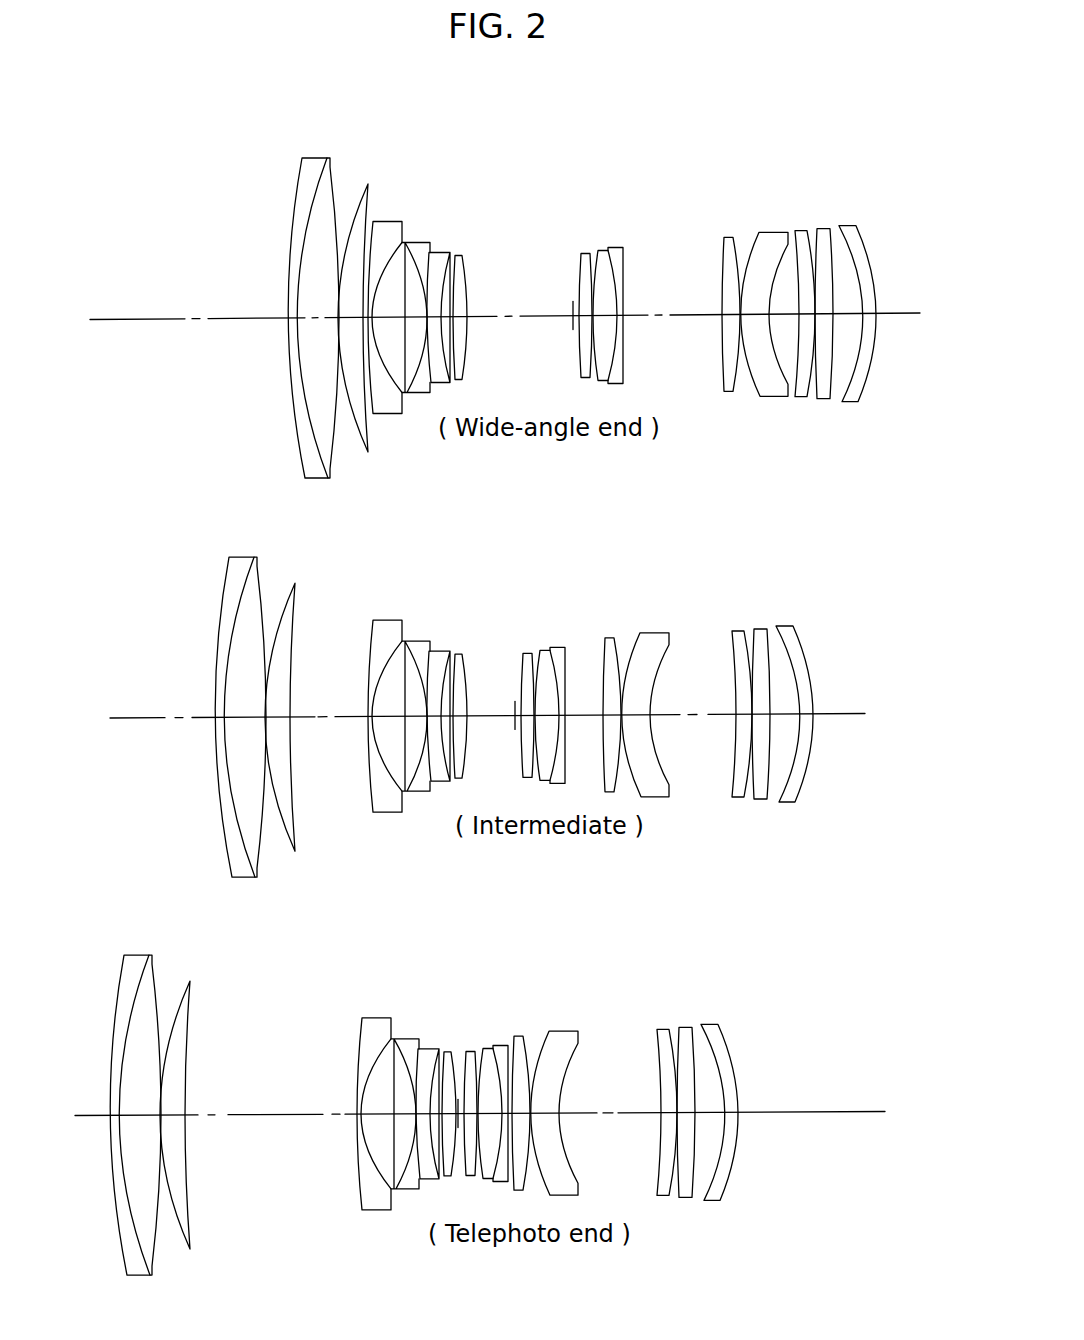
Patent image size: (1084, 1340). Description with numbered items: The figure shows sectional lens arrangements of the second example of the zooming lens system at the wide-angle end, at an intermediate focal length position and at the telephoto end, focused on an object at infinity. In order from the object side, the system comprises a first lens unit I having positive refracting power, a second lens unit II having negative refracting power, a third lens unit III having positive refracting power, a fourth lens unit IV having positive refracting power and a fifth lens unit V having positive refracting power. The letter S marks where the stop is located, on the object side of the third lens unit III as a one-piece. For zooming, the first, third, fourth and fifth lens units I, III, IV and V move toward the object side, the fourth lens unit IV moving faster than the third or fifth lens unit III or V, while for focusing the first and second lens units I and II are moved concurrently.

The first lens unit I is at (377, 143).
The second lens unit II is at (463, 142).
The third lens unit III is at (632, 139).
The fourth lens unit IV is at (788, 136).
The fifth lens unit V is at (860, 136).
The stop S is at (573, 306).